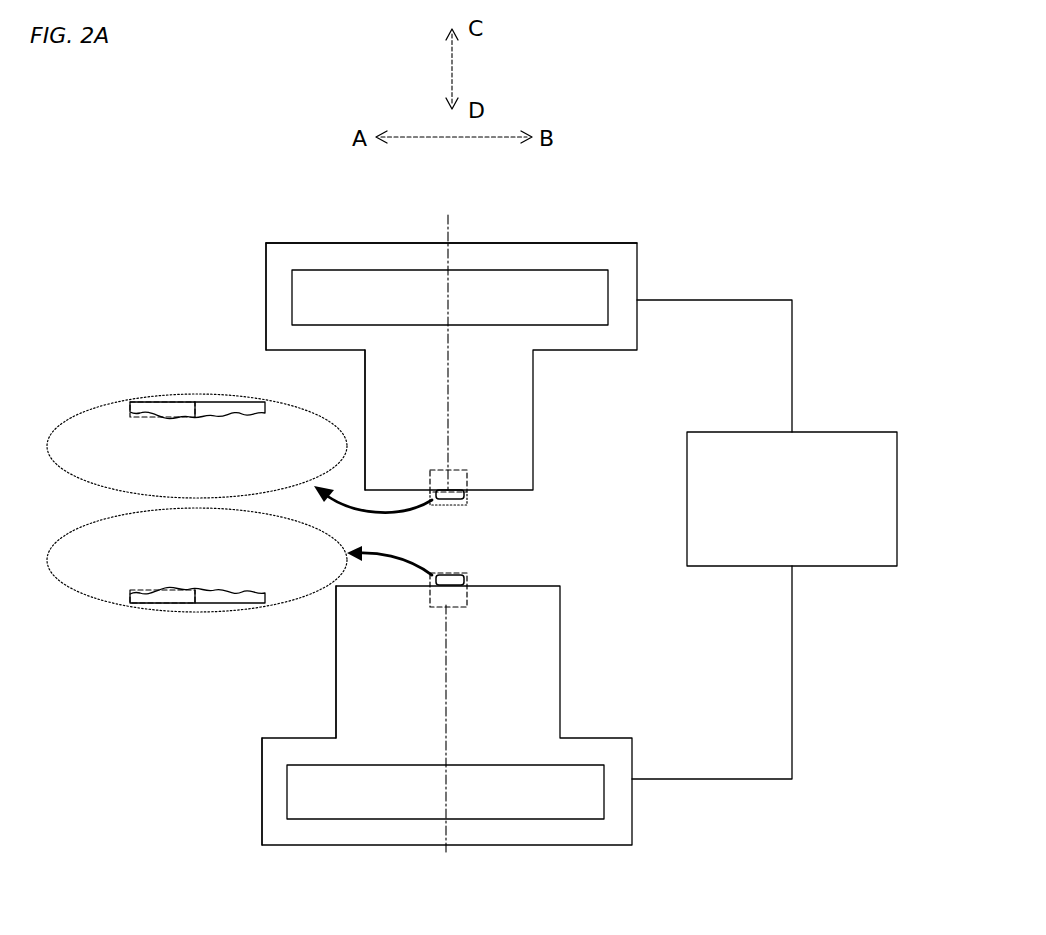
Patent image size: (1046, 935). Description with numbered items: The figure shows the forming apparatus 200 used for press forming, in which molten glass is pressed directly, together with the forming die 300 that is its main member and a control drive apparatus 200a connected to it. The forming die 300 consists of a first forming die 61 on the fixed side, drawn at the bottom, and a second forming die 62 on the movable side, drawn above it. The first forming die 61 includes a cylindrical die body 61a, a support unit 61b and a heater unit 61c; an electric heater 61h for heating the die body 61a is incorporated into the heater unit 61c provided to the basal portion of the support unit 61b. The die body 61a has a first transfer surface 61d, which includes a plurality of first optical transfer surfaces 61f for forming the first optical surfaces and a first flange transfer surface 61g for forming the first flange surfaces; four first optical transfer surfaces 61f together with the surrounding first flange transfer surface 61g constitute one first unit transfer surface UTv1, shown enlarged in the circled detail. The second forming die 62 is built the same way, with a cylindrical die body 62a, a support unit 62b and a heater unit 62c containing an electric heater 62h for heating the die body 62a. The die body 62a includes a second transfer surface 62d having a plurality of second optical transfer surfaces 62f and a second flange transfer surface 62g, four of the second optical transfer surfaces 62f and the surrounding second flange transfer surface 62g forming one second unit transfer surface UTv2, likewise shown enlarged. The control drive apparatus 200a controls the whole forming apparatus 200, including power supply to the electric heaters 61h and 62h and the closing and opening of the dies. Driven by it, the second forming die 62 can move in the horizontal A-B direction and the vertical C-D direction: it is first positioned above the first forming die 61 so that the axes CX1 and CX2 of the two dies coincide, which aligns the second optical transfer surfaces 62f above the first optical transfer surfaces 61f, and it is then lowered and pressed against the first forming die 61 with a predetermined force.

The forming die 300 is at (252, 218).
The forming apparatus 200 is at (840, 112).
The control drive apparatus 200a is at (840, 458).
The second forming die 62 is at (571, 260).
The electric heater 62h is at (411, 292).
The heater unit 62c is at (282, 293).
The support unit 62b is at (380, 383).
The die body 62a is at (432, 470).
The second transfer surface 62d is at (462, 503).
The second optical transfer surface 62f is at (182, 418).
The second flange transfer surface 62g is at (196, 418).
The first forming die 61 is at (527, 832).
The electric heater 61h is at (410, 808).
The heater unit 61c is at (278, 795).
The support unit 61b is at (375, 645).
The die body 61a is at (432, 607).
The first transfer surface 61d is at (463, 581).
The first optical transfer surface 61f is at (186, 590).
The first flange transfer surface 61g is at (198, 590).
The axis of the first forming die CX1 is at (450, 690).
The axis of the second forming die CX2 is at (450, 360).
The first unit transfer surface UTv1 is at (145, 590).
The second unit transfer surface UTv2 is at (140, 418).